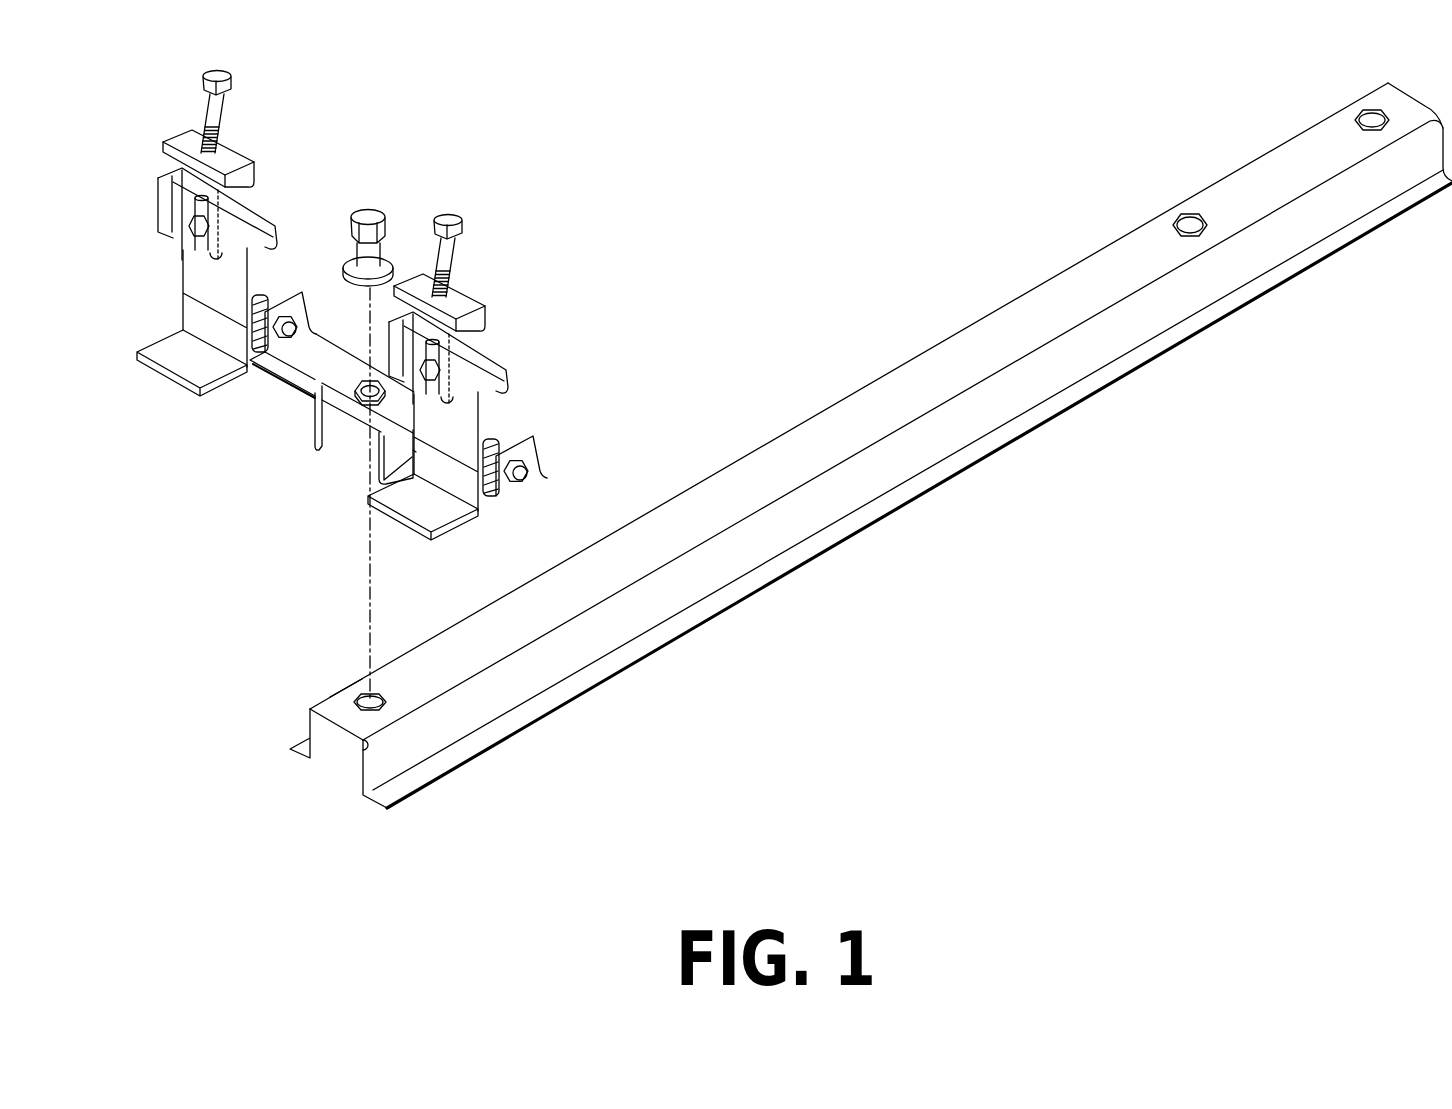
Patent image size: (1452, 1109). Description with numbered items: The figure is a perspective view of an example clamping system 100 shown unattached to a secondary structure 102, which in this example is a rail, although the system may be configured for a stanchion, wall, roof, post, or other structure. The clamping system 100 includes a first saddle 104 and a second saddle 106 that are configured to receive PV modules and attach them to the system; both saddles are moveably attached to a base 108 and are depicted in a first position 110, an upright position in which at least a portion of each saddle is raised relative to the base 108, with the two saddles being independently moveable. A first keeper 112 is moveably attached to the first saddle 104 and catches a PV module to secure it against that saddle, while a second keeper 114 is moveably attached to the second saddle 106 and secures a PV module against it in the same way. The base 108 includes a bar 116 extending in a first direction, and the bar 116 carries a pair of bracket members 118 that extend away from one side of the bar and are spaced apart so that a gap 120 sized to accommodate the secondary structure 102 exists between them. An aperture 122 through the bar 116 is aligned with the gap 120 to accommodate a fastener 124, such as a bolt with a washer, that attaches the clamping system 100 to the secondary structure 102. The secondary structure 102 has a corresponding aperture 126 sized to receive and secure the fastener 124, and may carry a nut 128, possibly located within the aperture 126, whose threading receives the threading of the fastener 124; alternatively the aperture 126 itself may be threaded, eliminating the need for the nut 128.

The clamping system 100 is at (603, 160).
The secondary structure 102 is at (1018, 318).
The first saddle 104 is at (187, 131).
The second saddle 106 is at (487, 314).
The base 108 is at (529, 500).
The first position 110 is at (301, 189).
The first keeper 112 is at (174, 262).
The second keeper 114 is at (512, 388).
The bar 116 is at (318, 366).
The bracket members 118 is at (322, 437).
The gap 120 is at (355, 474).
The aperture 122 is at (356, 396).
The fastener 124 is at (384, 211).
The aperture 126 is at (385, 708).
The nut 128 is at (352, 704).